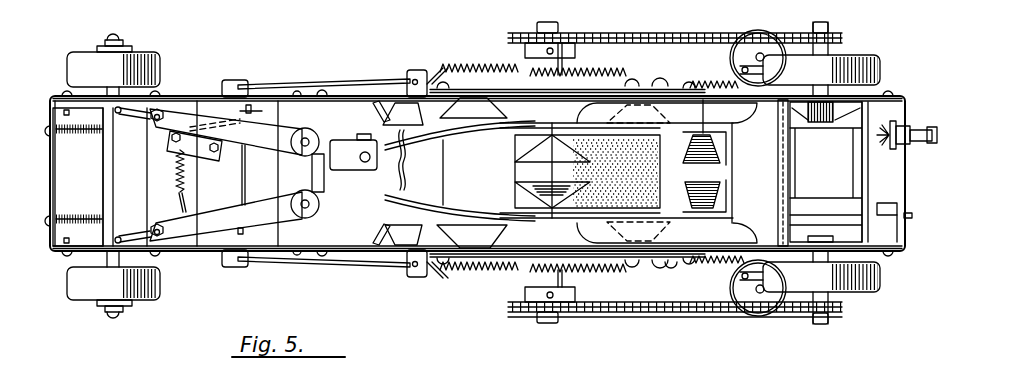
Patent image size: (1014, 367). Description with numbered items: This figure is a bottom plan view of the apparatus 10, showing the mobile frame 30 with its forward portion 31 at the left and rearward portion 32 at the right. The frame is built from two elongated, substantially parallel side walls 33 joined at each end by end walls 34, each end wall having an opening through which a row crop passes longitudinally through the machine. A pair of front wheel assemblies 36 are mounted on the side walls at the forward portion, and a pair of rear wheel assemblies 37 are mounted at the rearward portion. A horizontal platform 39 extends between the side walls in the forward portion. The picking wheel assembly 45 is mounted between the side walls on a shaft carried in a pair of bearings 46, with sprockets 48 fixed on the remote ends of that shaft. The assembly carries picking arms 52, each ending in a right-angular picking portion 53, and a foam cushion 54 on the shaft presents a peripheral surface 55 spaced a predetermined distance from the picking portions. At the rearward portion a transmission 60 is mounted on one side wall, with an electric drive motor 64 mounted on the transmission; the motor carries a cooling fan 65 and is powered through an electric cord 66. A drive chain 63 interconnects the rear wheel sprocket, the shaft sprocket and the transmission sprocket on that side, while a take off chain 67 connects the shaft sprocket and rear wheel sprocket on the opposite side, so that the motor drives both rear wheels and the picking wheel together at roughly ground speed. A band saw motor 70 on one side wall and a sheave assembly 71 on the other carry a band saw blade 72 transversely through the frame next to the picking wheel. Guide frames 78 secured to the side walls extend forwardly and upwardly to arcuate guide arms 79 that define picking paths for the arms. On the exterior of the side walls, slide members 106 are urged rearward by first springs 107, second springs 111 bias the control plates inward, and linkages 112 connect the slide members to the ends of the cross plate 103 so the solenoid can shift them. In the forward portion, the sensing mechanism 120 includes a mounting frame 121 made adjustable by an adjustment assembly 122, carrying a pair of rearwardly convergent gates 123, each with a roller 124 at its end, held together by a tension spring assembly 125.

The apparatus 10 is at (208, 66).
The mobile frame 30 is at (188, 262).
The forward portion 31 is at (53, 258).
The rearward portion 32 is at (904, 96).
The side walls 33 is at (183, 97).
The end walls 34 is at (50, 114).
The front wheel assemblies 36 is at (78, 64).
The rear wheel assemblies 37 is at (872, 60).
The horizontal platform 39 is at (68, 167).
The picking wheel assembly 45 is at (703, 118).
The bearings 46 is at (520, 68).
The sprockets 48 is at (570, 44).
The picking arm 52 is at (662, 112).
The picking portion 53 is at (398, 112).
The foam cushion 54 is at (497, 186).
The peripheral surface 55 is at (700, 166).
The transmission 60 is at (857, 232).
The drive chain 63 is at (690, 313).
The electric drive motor 64 is at (850, 173).
The cooling fan 65 is at (776, 106).
The electric cord 66 is at (931, 126).
The take off chain 67 is at (688, 42).
The band saw motor 70 is at (747, 31).
The sheave assembly 71 is at (772, 48).
The band saw blade 72 is at (792, 212).
The guide frame 78 is at (680, 265).
The arcuate guide arm 79 is at (586, 170).
The cross plate 103 is at (235, 80).
The slide member 106 is at (415, 72).
The first spring 107 is at (740, 74).
The second spring 111 is at (440, 76).
The linkage 112 is at (315, 80).
The mechanism for sensing maturity 120 is at (275, 116).
The mounting frame 121 is at (125, 183).
The adjustment assembly 122 is at (62, 138).
The gates 123 is at (258, 168).
The roller 124 is at (322, 196).
The tension spring assembly 125 is at (180, 163).